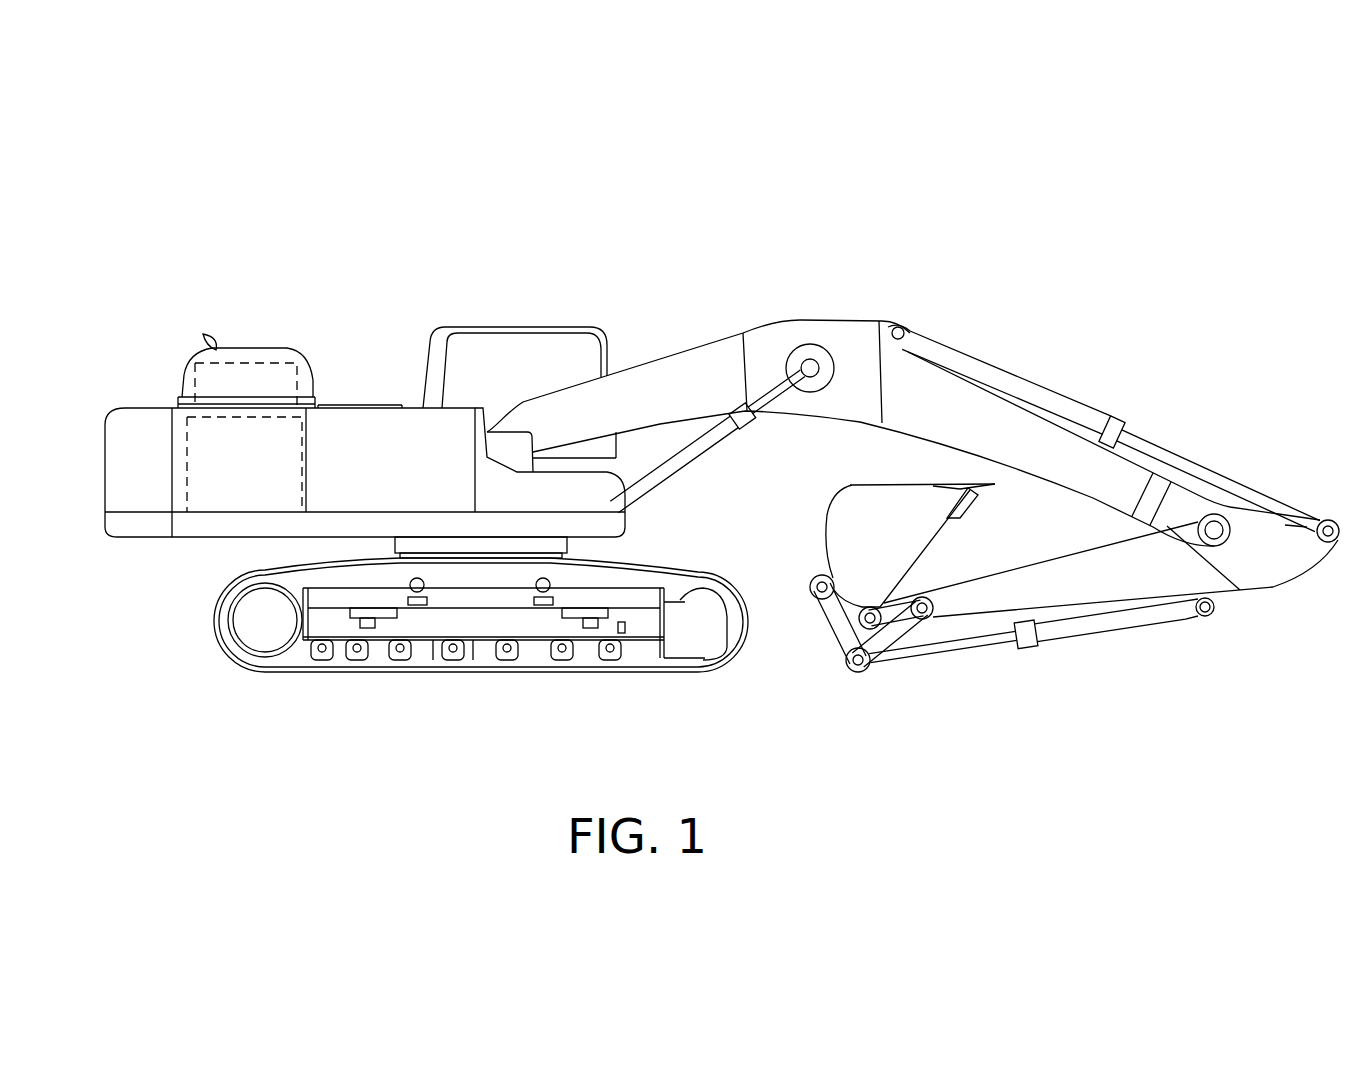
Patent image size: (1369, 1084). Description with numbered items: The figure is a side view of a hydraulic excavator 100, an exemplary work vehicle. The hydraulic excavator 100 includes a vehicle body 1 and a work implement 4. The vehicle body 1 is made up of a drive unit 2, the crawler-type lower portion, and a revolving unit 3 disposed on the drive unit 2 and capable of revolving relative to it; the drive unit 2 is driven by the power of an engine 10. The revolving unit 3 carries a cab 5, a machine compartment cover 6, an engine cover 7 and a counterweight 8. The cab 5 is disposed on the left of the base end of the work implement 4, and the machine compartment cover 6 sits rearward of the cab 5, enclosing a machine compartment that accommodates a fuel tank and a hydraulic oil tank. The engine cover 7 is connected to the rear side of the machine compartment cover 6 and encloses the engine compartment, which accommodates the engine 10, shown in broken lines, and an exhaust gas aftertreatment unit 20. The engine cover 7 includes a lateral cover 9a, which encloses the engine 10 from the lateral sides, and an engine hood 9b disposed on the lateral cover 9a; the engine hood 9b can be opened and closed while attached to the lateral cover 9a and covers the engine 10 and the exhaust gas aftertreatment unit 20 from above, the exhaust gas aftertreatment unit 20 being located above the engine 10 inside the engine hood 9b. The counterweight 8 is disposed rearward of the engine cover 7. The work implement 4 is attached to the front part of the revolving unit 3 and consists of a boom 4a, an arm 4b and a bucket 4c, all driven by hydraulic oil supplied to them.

The hydraulic excavator 100 is at (962, 222).
The vehicle body 1 is at (577, 303).
The drive unit 2 is at (212, 647).
The revolving unit 3 is at (133, 549).
The work implement 4 is at (1083, 380).
The boom 4a is at (708, 353).
The arm 4b is at (967, 610).
The bucket 4c is at (850, 517).
The cab 5 is at (477, 323).
The machine compartment cover 6 is at (357, 405).
The engine cover 7 is at (363, 268).
The counterweight 8 is at (147, 407).
The lateral cover 9a is at (288, 400).
The engine hood 9b is at (280, 348).
The engine 10 is at (187, 447).
The exhaust gas aftertreatment unit 20 is at (223, 363).